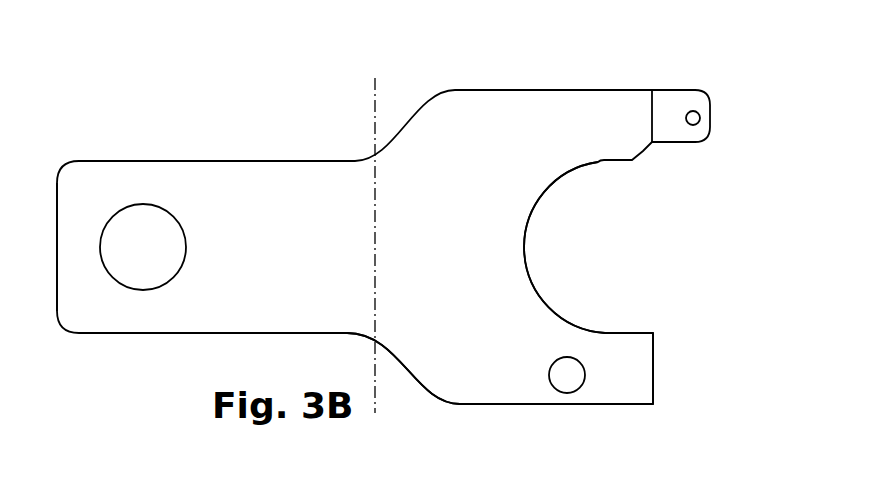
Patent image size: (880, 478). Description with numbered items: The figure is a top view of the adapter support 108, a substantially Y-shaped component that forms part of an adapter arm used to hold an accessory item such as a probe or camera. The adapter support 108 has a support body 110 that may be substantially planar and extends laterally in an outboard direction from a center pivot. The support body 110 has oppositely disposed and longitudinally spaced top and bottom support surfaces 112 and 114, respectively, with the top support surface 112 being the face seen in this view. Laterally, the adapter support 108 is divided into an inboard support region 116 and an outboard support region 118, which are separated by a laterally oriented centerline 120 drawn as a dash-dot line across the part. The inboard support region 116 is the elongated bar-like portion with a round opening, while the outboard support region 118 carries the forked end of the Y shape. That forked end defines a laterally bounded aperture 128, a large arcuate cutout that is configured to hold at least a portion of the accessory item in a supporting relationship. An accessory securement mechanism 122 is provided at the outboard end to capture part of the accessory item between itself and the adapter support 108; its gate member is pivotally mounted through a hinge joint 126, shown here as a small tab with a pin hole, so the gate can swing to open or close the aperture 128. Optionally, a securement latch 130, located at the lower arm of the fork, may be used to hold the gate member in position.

The adapter support 108 is at (402, 418).
The support body 110 is at (440, 215).
The top support surface 112 is at (250, 295).
The bottom support surface 114 is at (227, 205).
The inboard support region 116 is at (146, 116).
The outboard support region 118 is at (563, 75).
The centerline 120 is at (375, 108).
The accessory securement mechanism 122 is at (694, 75).
The hinge joint 126 is at (722, 120).
The laterally bounded aperture 128 is at (599, 250).
The securement latch 130 is at (644, 423).